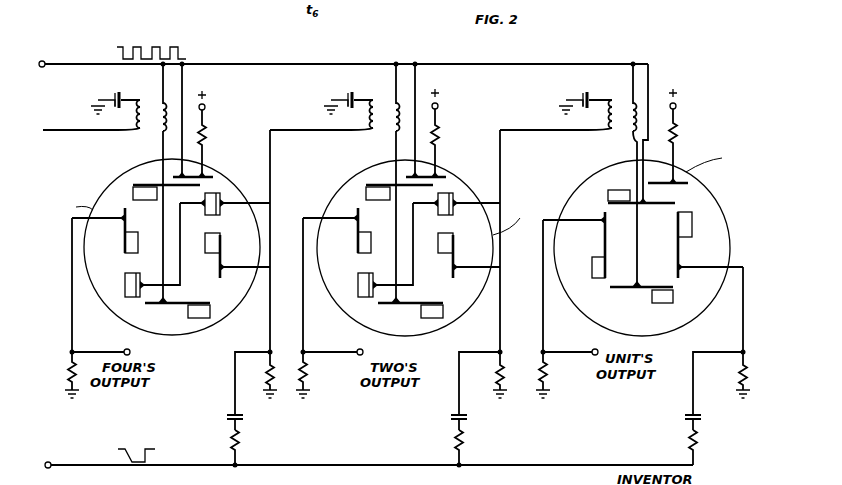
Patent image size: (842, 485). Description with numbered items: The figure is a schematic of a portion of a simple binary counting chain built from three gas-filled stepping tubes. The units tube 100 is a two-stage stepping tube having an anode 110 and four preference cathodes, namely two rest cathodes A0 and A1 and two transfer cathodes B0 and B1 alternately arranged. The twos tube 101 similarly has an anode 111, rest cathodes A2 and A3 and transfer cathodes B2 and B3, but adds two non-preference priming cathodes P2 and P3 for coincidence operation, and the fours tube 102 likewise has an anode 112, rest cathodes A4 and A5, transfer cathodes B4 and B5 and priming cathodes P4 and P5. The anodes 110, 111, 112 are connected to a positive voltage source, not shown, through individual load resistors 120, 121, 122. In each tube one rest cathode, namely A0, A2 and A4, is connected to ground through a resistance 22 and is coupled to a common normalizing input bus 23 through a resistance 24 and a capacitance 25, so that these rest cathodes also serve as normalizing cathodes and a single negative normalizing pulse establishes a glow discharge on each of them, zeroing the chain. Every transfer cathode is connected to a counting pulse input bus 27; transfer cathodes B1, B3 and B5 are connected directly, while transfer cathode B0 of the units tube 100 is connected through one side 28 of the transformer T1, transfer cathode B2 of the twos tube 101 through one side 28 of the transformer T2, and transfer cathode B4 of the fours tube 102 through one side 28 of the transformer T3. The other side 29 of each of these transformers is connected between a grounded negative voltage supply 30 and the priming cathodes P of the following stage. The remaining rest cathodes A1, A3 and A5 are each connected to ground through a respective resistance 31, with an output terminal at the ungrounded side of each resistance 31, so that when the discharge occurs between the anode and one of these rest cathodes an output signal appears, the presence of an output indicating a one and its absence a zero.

The counting pulse input bus 27 is at (257, 64).
The common normalizing input bus 23 is at (333, 465).
The grounded negative voltage supply 30 is at (117, 90).
The other side of transformer 29 is at (132, 121).
The one side of transformer 28 is at (160, 142).
The transformer T3 is at (159, 104).
The transformer T2 is at (392, 104).
The transformer T1 is at (626, 103).
The load resistor 122 is at (208, 136).
The load resistor 121 is at (441, 138).
The load resistor 120 is at (678, 134).
The anode 112 is at (213, 176).
The anode 111 is at (447, 177).
The anode 110 is at (689, 183).
The fours tube 102 is at (262, 250).
The twos tube 101 is at (473, 304).
The units tube 100 is at (722, 211).
The transfer cathode B5 is at (133, 184).
The transfer cathode B4 is at (198, 318).
The transfer cathode B3 is at (368, 184).
The transfer cathode B2 is at (430, 318).
The transfer cathode B1 is at (622, 189).
The transfer cathode B0 is at (660, 304).
The priming cathode P5 is at (221, 197).
The priming cathode P4 is at (125, 291).
The priming cathode P3 is at (456, 208).
The priming cathode P2 is at (358, 291).
The rest cathode A5 is at (125, 245).
The rest cathode A4 is at (221, 246).
The rest cathode A3 is at (358, 245).
The rest cathode A2 is at (454, 245).
The rest cathode A1 is at (600, 266).
The rest cathode A0 is at (689, 228).
The resistance 31 is at (68, 380).
The resistance 22 is at (268, 369).
The capacitance 25 is at (228, 417).
The resistance 24 is at (241, 440).